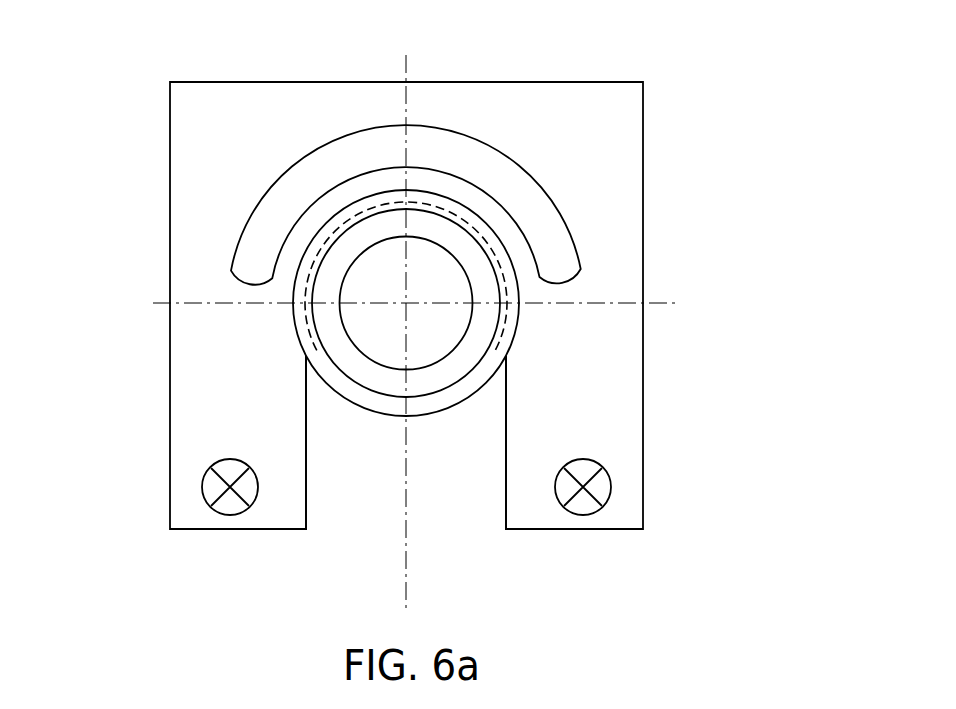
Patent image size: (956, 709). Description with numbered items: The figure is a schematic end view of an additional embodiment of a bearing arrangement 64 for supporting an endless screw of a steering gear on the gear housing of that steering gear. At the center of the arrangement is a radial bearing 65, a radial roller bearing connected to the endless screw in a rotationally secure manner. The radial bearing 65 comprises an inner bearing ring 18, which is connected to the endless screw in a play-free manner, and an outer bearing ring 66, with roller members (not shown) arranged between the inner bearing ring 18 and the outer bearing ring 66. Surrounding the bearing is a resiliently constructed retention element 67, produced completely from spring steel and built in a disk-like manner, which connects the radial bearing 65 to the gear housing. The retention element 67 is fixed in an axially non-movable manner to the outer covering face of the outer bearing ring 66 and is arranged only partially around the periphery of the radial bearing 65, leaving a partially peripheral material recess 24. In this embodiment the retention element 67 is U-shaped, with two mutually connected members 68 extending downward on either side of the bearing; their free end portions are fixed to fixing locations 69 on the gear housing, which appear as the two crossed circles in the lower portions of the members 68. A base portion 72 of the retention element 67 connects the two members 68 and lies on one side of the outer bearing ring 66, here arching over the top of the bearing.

The inner bearing ring 18 is at (425, 385).
The partially peripheral material recess 24 is at (365, 148).
The bearing arrangement 64 is at (687, 135).
The radial bearing 65 is at (390, 417).
The outer bearing ring 66 is at (348, 395).
The retention element 67 is at (170, 187).
The members 68 is at (222, 382).
The fixing locations 69 is at (220, 488).
The base portion 72 is at (476, 110).